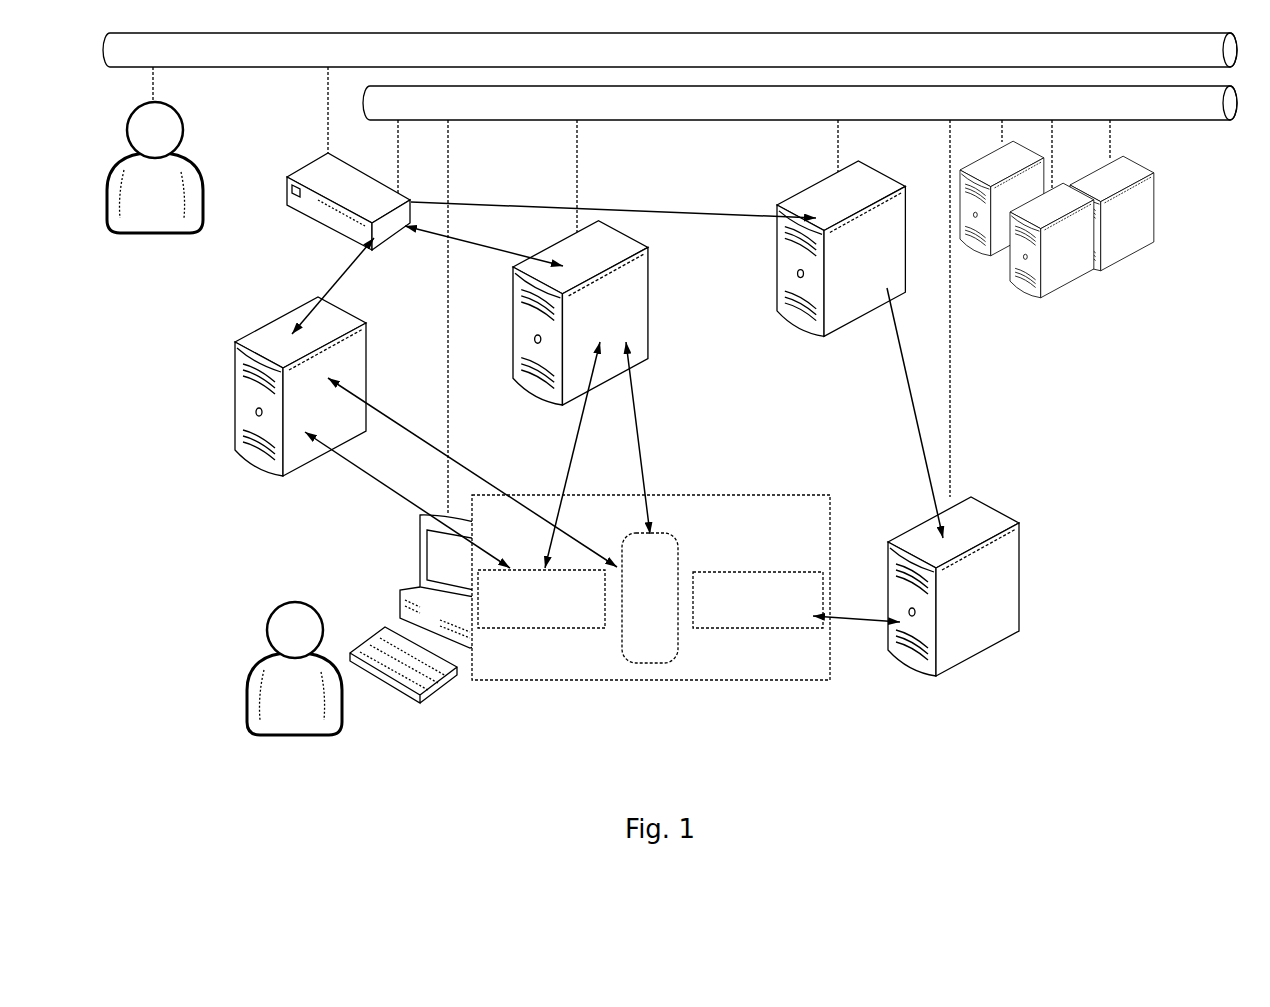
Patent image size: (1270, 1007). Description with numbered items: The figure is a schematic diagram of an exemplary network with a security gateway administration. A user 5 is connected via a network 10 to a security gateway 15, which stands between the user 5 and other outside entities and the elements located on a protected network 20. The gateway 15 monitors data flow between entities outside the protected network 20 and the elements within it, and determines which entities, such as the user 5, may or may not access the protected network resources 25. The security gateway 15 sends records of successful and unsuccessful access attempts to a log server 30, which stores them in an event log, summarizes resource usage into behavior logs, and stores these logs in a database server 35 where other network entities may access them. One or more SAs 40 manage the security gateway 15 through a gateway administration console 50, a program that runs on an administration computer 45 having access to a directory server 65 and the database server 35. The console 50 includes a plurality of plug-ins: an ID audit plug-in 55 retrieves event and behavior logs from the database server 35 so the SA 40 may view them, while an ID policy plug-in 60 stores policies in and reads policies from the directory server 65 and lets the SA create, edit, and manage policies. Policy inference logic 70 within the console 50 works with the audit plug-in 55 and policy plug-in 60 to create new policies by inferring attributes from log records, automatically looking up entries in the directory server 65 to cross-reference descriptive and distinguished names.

The user 5 is at (190, 233).
The network 10 is at (287, 52).
The security gateway 15 is at (298, 213).
The protected network 20 is at (628, 105).
The protected network resources 25 is at (1022, 192).
The log server 30 is at (787, 268).
The database server 35 is at (998, 575).
The SA (system administrator) 40 is at (258, 672).
The administration computer 45 is at (420, 552).
The gateway administration console 50 is at (785, 510).
The ID audit plug-in 55 is at (777, 622).
The ID policy plug-in 60 is at (562, 613).
The directory server 65 is at (255, 400).
The policy inference logic 70 is at (663, 660).